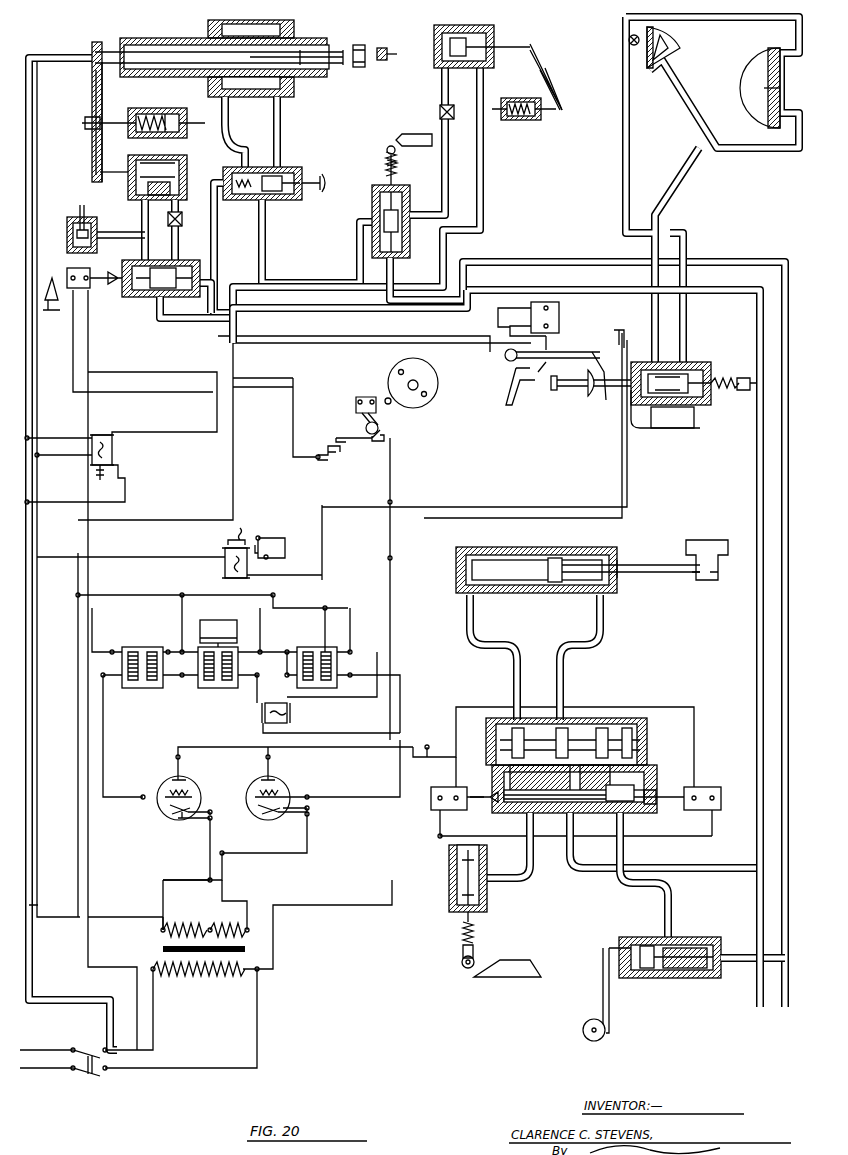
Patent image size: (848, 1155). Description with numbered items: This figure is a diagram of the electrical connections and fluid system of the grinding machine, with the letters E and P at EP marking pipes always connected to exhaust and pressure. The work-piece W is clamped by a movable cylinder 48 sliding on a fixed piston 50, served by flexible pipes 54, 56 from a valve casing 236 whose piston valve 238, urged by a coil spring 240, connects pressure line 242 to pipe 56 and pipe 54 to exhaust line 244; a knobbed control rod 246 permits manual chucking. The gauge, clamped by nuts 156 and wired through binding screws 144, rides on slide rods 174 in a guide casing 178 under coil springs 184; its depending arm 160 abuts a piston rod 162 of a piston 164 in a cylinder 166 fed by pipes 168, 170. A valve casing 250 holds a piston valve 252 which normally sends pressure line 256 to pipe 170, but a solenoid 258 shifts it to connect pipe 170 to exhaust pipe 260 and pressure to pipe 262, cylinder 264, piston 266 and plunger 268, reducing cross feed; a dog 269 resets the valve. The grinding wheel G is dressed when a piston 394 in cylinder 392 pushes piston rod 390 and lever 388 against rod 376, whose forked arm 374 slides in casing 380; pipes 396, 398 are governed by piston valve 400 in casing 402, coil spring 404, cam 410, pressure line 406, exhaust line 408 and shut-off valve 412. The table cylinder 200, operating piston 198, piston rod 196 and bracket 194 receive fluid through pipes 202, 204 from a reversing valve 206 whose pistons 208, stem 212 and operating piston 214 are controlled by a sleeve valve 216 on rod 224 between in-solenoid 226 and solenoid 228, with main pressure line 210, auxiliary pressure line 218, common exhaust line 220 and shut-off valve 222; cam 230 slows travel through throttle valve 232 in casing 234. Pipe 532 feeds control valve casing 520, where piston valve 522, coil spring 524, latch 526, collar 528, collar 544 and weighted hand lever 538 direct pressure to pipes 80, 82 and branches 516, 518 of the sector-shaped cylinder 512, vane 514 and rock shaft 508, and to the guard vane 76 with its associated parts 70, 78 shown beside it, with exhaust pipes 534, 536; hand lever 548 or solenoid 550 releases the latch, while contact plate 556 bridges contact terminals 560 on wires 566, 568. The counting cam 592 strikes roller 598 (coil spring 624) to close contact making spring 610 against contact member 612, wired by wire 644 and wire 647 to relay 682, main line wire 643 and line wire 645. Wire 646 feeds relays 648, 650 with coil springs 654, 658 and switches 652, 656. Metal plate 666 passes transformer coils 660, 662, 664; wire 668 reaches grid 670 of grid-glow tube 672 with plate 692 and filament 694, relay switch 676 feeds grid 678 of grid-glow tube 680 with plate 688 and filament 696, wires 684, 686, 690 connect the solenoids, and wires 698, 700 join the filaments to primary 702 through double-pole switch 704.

The nuts 156 is at (95, 44).
The binding screws 144 is at (296, 28).
The work-piece W is at (363, 65).
The grinding wheel G is at (387, 63).
The movable cylinder 48 is at (243, 132).
The fixed piston 50 is at (249, 121).
The flexible pipe 56 is at (289, 132).
The flexible pipe 54 is at (266, 145).
The slide rods 174 is at (112, 120).
The coil spring 184 is at (148, 108).
The guide casing 178 is at (209, 138).
The depending arm 160 is at (94, 156).
The piston rod 162 is at (117, 156).
The piston 164 is at (188, 165).
The cylinder 166 is at (122, 224).
The pipe 168 is at (140, 230).
The pipe 170 is at (188, 231).
The valve casing 236 is at (300, 168).
The control rod 246 is at (327, 174).
The coil spring 240 is at (229, 248).
The piston valve 238 is at (272, 200).
The exhaust line 244 is at (229, 228).
The pressure line 242 is at (317, 241).
The exhaust pipe 260 is at (224, 284).
The cylinder 264 is at (70, 214).
The plunger 268 is at (73, 214).
The piston 266 is at (72, 248).
The pipe 262 is at (121, 245).
The valve casing 250 is at (148, 298).
The solenoid 258 is at (105, 288).
The piston valve 252 is at (181, 311).
The pressure line 256 is at (174, 322).
The dog 269 is at (48, 312).
The piston valve 400 is at (408, 243).
The coil spring 404 is at (409, 165).
The cam 410 is at (414, 140).
The casing 402 is at (427, 141).
The pressure line 406 is at (362, 265).
The exhaust line 408 is at (398, 268).
The piston 394 is at (432, 70).
The pipe 396 is at (409, 100).
The shut-off valve 412 is at (427, 115).
The piston rod 390 is at (520, 40).
The cylinder 392 is at (492, 70).
The lever 388 is at (558, 84).
The forked arm 374 is at (523, 103).
The rod 376 is at (546, 115).
The casing 380 is at (512, 120).
The pipe 398 is at (488, 167).
The pipe 82 is at (676, 178).
The pipe 80 is at (690, 338).
The pipe 532 is at (690, 322).
The vane 76 is at (663, 47).
The pivot 70 is at (650, 68).
The arm 78 is at (678, 58).
The pipe 516 is at (690, 24).
The sector-shaped cylinder 512 is at (762, 50).
The vane 514 is at (772, 74).
The rock shaft 508 is at (782, 90).
The pipe 518 is at (732, 146).
The solenoid 550 is at (560, 314).
The contact plate 556 is at (611, 298).
The contact terminals 560 is at (616, 330).
The weighted hand lever 538 is at (572, 352).
The hand lever 548 is at (514, 392).
The collar 528 is at (546, 390).
The latch 526 is at (591, 389).
The collar 544 is at (596, 396).
The control valve casing 520 is at (712, 404).
The piston valve 522 is at (708, 364).
The coil spring 524 is at (733, 391).
The exhaust pipe 536 is at (672, 417).
The exhaust pipe 534 is at (705, 424).
The wire 566 is at (614, 428).
The wire 568 is at (628, 451).
The roller 598 is at (390, 390).
The cam 592 is at (416, 408).
The coil spring 624 is at (356, 406).
The contact making spring 610 is at (340, 438).
The contact member 612 is at (338, 452).
The wire 644 is at (294, 458).
The wire 647 is at (394, 461).
The wire 646 is at (38, 410).
The relay 648 is at (118, 445).
The coil spring 654 is at (94, 476).
The switch 652 is at (128, 478).
The line wire 645 is at (232, 501).
The relay 650 is at (214, 578).
The coil spring 658 is at (246, 534).
The switch 656 is at (280, 545).
The wire 686 is at (355, 585).
The metal plate 666 is at (218, 636).
The transformer coils 660 is at (145, 642).
The transformer coils 662 is at (243, 648).
The transformer coils 664 is at (331, 647).
The main line wire 643 is at (52, 1048).
The relay 682 is at (288, 710).
The relay switch 676 is at (260, 710).
The wire 668 is at (106, 740).
The wire 690 is at (214, 748).
The grid 670 is at (160, 808).
The plate 692 is at (188, 780).
The grid-glow tube 672 is at (170, 826).
The filament 694 is at (206, 824).
The grid-glow tube 680 is at (262, 822).
The plate 688 is at (276, 780).
The grid 678 is at (290, 786).
The filament 696 is at (302, 822).
The wire 684 is at (421, 769).
The wire 700 is at (170, 876).
The wire 698 is at (222, 866).
The primary 702 is at (188, 974).
The double-pole switch 704 is at (90, 1078).
The cylinder 200 is at (520, 554).
The operating piston 198 is at (546, 572).
The piston rod 196 is at (634, 566).
The bracket 194 is at (704, 542).
The pipe 202 is at (476, 620).
The pipe 204 is at (604, 624).
The reversing valve 206 is at (650, 752).
The pistons 208 is at (528, 718).
The stem 212 is at (616, 718).
The operating piston 214 is at (640, 716).
The rod 224 is at (666, 790).
The in-solenoid 226 is at (442, 818).
The solenoid 228 is at (670, 818).
The sleeve valve 216 is at (598, 812).
The main pressure line 210 is at (525, 845).
The common exhaust line 220 is at (665, 840).
The auxiliary pressure line 218 is at (616, 851).
The casing 234 is at (488, 905).
The throttle valve 232 is at (460, 951).
The cam 230 is at (507, 967).
The shut-off valve 222 is at (650, 978).
The pressure and exhaust pipes EP is at (504, 657).